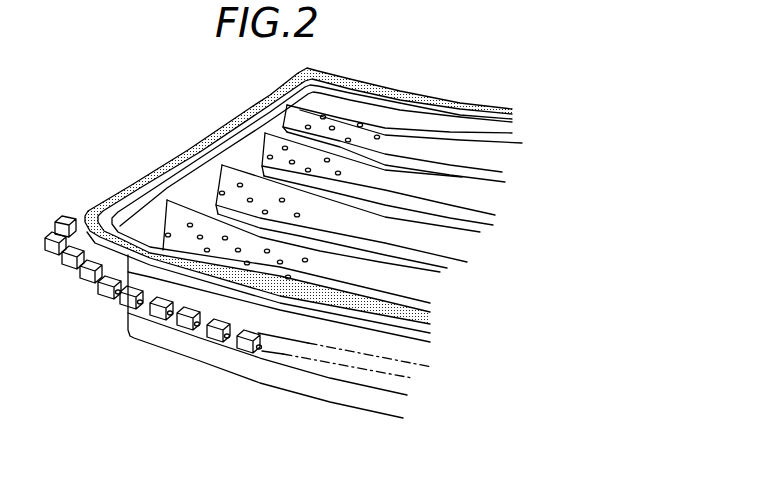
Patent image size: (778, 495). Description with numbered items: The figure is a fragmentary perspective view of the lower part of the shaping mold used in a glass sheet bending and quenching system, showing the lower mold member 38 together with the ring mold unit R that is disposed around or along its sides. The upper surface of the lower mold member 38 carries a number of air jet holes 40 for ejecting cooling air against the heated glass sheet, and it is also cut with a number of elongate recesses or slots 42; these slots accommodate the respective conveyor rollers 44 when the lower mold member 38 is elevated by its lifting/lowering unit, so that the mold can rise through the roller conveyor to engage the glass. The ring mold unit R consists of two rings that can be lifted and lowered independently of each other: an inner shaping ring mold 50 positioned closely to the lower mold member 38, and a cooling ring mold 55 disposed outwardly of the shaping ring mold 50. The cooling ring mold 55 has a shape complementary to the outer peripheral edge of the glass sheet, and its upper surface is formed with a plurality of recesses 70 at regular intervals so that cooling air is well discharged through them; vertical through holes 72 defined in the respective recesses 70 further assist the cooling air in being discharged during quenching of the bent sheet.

The lower mold member 38 is at (322, 372).
The air jet holes 40 is at (166, 233).
The elongate recesses or slots 42 is at (242, 160).
The rollers 44 is at (395, 153).
The shaping ring mold 50 is at (201, 147).
The cooling ring mold 55 is at (92, 288).
The recesses 70 is at (187, 330).
The vertical through holes 72 is at (222, 342).
The ring mold unit R is at (78, 200).